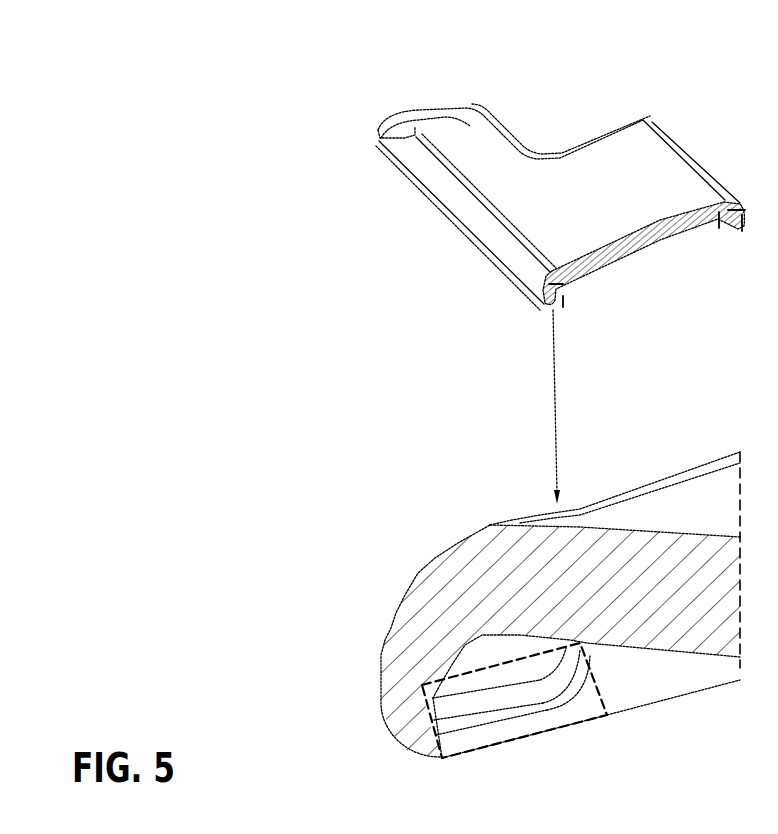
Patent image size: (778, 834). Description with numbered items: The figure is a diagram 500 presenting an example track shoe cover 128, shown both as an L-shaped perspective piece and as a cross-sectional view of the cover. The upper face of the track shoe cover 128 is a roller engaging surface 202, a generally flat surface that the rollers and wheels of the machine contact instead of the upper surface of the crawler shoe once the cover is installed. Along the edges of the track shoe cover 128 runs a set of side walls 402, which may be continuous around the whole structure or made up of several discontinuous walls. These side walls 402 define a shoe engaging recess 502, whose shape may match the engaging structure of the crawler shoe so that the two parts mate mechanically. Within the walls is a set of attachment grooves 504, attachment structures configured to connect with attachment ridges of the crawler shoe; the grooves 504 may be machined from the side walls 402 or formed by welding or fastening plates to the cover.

The diagram 500 is at (118, 66).
The track shoe cover 128 is at (380, 92).
The roller engaging surface 202 is at (608, 214).
The set of side walls 402 is at (500, 243).
The shoe engaging recess 502 is at (672, 266).
The set of attachment grooves 504 is at (553, 307).